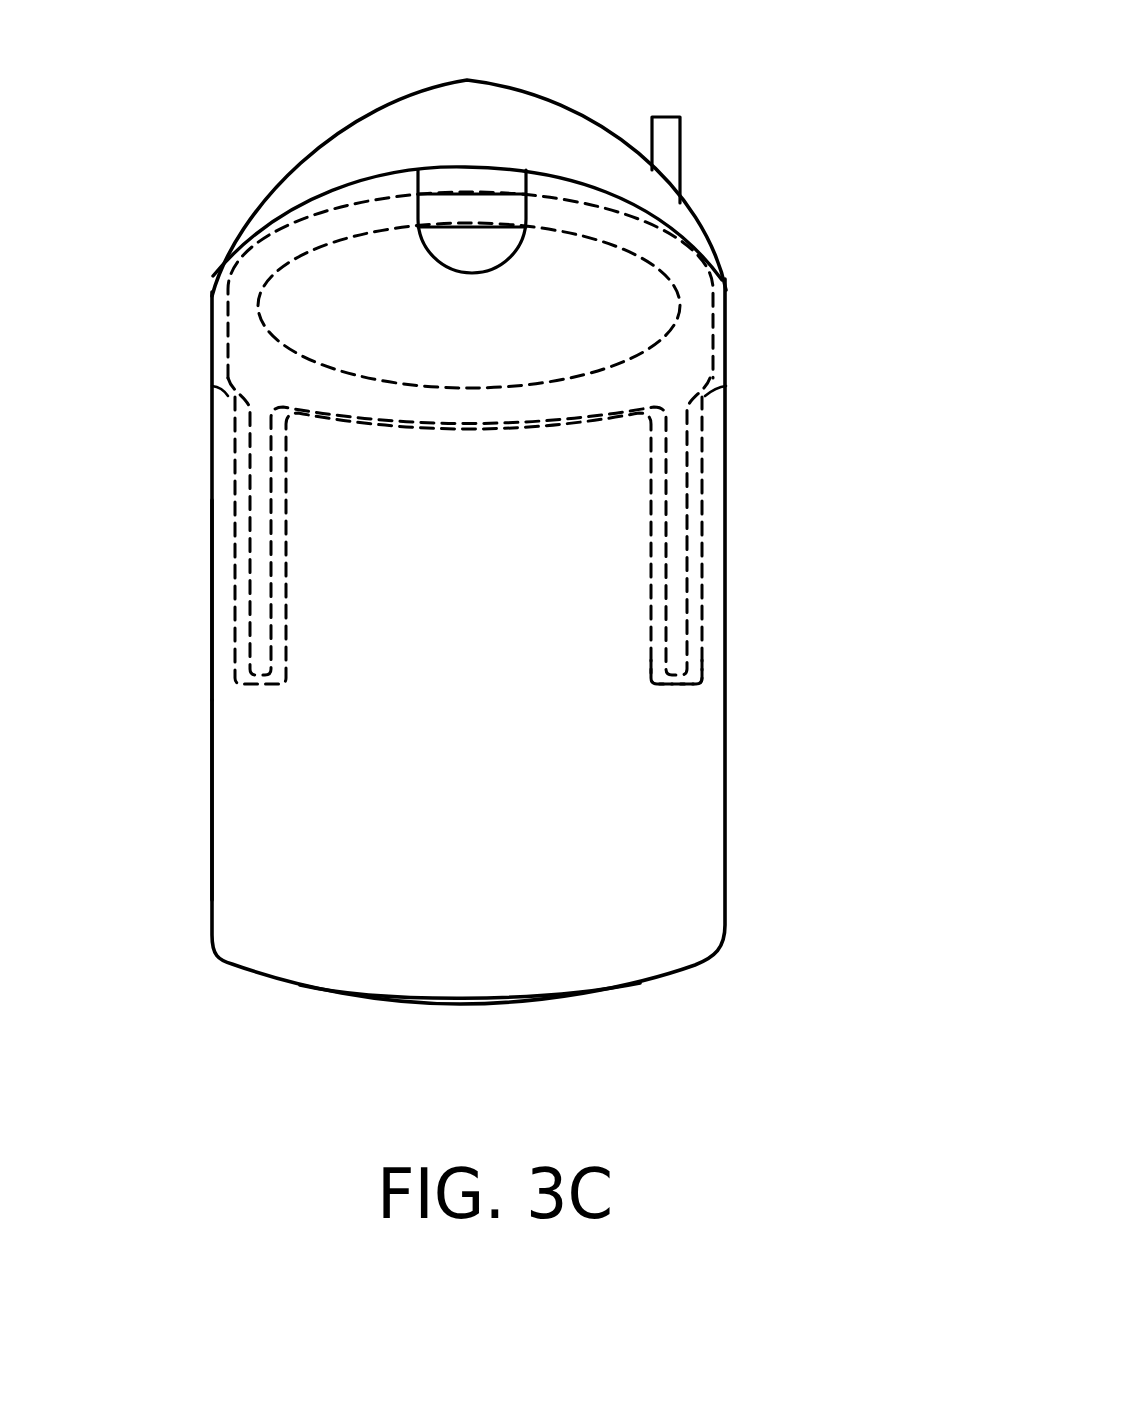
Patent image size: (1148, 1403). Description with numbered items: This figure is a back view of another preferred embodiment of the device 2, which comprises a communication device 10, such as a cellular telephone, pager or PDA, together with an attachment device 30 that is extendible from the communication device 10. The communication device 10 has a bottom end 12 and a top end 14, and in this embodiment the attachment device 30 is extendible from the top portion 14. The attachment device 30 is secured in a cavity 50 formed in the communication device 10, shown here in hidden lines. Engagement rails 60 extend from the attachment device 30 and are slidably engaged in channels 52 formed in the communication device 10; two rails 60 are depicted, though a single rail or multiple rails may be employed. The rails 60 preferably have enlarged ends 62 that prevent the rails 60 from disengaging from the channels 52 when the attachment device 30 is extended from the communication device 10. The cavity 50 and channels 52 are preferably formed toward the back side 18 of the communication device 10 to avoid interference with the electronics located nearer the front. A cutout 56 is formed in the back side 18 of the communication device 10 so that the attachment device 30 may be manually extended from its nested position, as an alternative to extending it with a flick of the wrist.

The device 2 is at (152, 470).
The communication device 10 is at (228, 783).
The bottom end 12 is at (617, 990).
The top end 14 is at (579, 117).
The back side 18 is at (620, 813).
The attachment device 30 is at (697, 323).
The cavity 50 is at (714, 275).
The channels 52 is at (698, 457).
The cutout 56 is at (462, 250).
The engagement rails 60 is at (680, 543).
The enlarged ends 62 is at (693, 665).